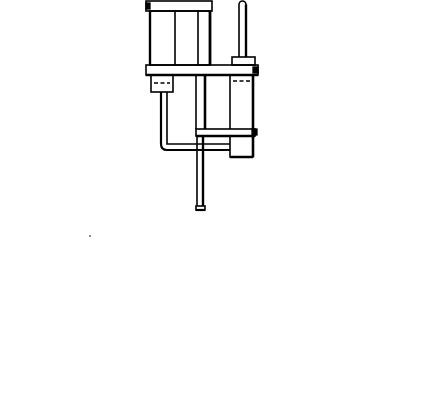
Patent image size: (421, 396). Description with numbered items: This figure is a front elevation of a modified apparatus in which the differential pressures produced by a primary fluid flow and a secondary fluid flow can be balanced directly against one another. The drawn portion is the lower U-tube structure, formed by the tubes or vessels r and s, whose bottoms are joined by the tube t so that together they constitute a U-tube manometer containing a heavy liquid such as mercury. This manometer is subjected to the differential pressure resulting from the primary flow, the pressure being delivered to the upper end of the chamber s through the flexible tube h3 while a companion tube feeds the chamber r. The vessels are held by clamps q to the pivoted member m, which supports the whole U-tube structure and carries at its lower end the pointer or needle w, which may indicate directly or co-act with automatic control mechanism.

The clamps q is at (146, 6).
The chamber r is at (151, 38).
The tube h3 is at (246, 14).
The chamber s is at (252, 108).
The tube t is at (160, 144).
The member m is at (204, 181).
The pointer or needle w is at (205, 208).